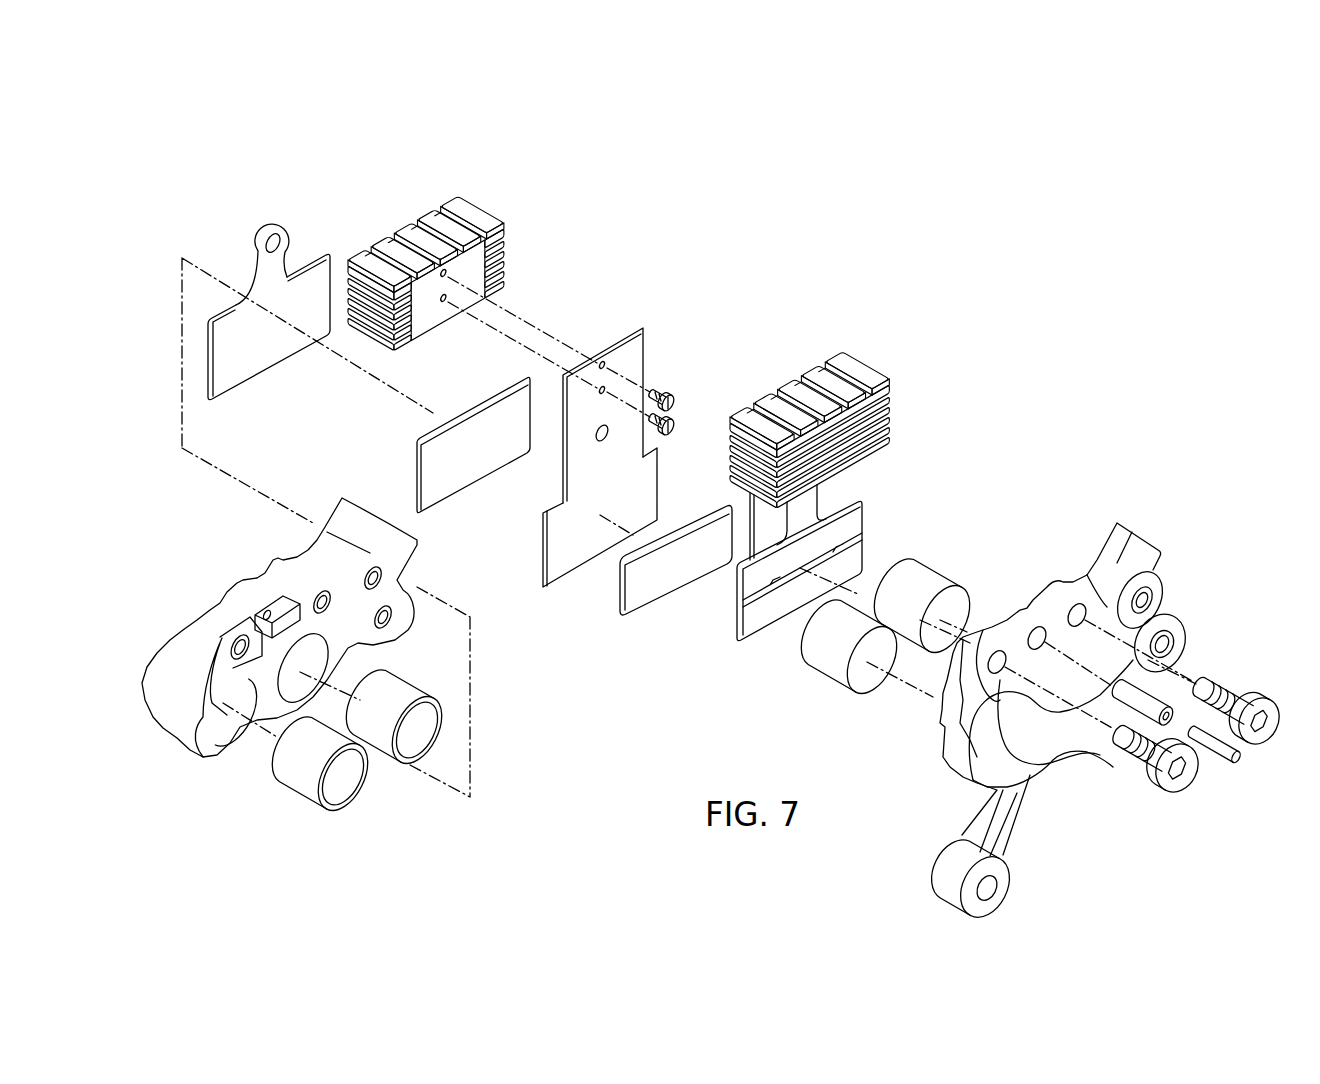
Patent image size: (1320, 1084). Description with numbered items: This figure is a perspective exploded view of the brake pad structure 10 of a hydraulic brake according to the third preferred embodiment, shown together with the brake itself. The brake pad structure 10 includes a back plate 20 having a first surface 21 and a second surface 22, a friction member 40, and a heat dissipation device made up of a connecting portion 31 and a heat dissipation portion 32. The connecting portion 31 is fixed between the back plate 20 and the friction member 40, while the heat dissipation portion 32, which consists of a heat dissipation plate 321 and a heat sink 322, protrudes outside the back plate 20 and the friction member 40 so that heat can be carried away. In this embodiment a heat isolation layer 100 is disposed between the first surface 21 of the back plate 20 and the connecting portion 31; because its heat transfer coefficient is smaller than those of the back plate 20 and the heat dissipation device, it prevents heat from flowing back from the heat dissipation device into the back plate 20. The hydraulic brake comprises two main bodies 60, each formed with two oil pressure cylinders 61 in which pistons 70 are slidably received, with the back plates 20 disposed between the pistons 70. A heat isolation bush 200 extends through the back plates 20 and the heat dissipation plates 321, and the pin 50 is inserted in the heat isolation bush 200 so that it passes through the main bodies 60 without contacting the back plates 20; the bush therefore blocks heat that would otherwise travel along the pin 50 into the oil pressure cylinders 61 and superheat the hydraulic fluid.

The brake pad structure 10 is at (900, 366).
The back plate 20 is at (279, 200).
The first surface 21 is at (224, 378).
The second surface 22 is at (757, 640).
The connecting portion 31 is at (583, 532).
The heat dissipation portion 32 is at (677, 224).
The heat dissipation plate 321 is at (621, 352).
The heat sink 322 is at (468, 207).
The friction member 40 is at (632, 590).
The pin 50 is at (1238, 762).
The main body 60 is at (278, 577).
The oil pressure cylinder 61 is at (222, 715).
The piston 70 is at (300, 780).
The heat isolation layer 100 is at (430, 459).
The heat isolation bush 200 is at (1125, 695).